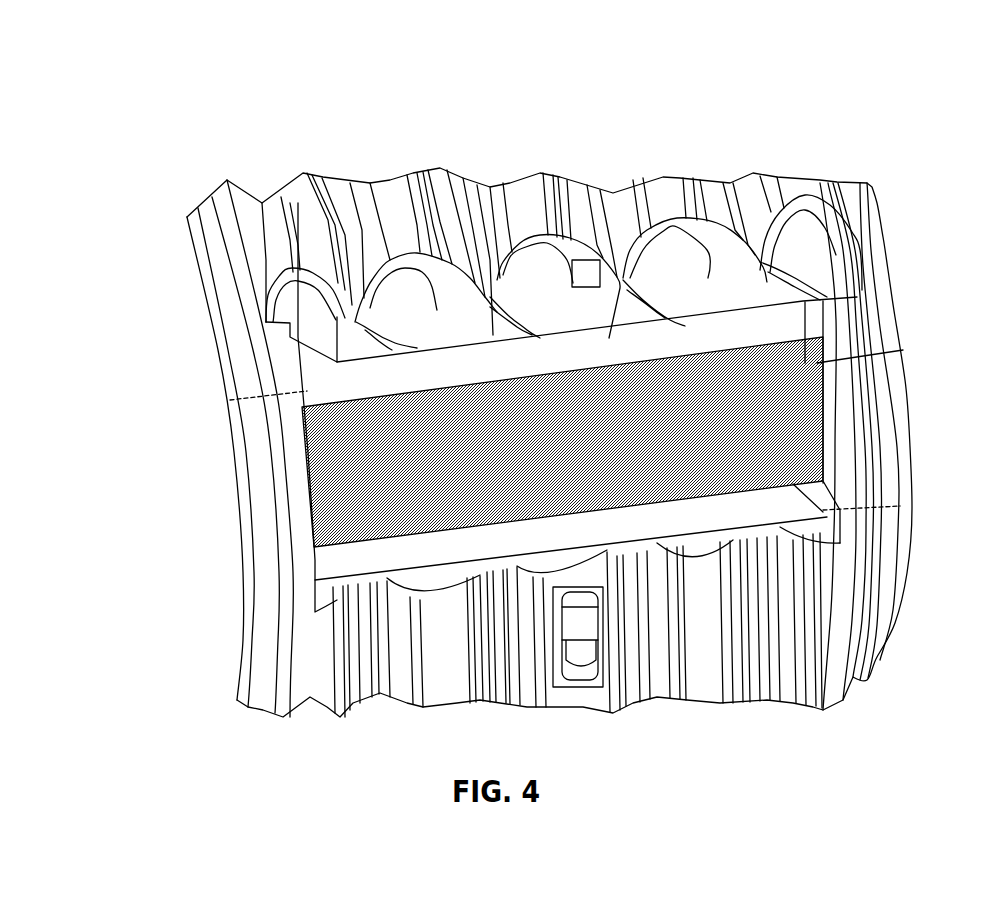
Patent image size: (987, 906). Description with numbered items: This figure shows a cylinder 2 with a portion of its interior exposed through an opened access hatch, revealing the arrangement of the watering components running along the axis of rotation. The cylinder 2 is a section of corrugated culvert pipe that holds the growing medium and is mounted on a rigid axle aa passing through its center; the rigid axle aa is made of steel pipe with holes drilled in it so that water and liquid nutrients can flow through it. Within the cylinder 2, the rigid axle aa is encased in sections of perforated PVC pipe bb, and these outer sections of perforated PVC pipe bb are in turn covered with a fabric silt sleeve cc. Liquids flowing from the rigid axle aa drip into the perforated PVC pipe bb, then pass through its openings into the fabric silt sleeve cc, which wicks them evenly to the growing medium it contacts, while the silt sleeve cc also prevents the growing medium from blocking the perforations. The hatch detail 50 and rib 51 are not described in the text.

The cylinder 2 is at (830, 85).
The reinforcing band 50 is at (353, 557).
The rib 51 is at (550, 240).
The rigid axle aa is at (212, 408).
The perforated PVC pipe bb is at (900, 506).
The fabric silt sleeve cc is at (903, 350).